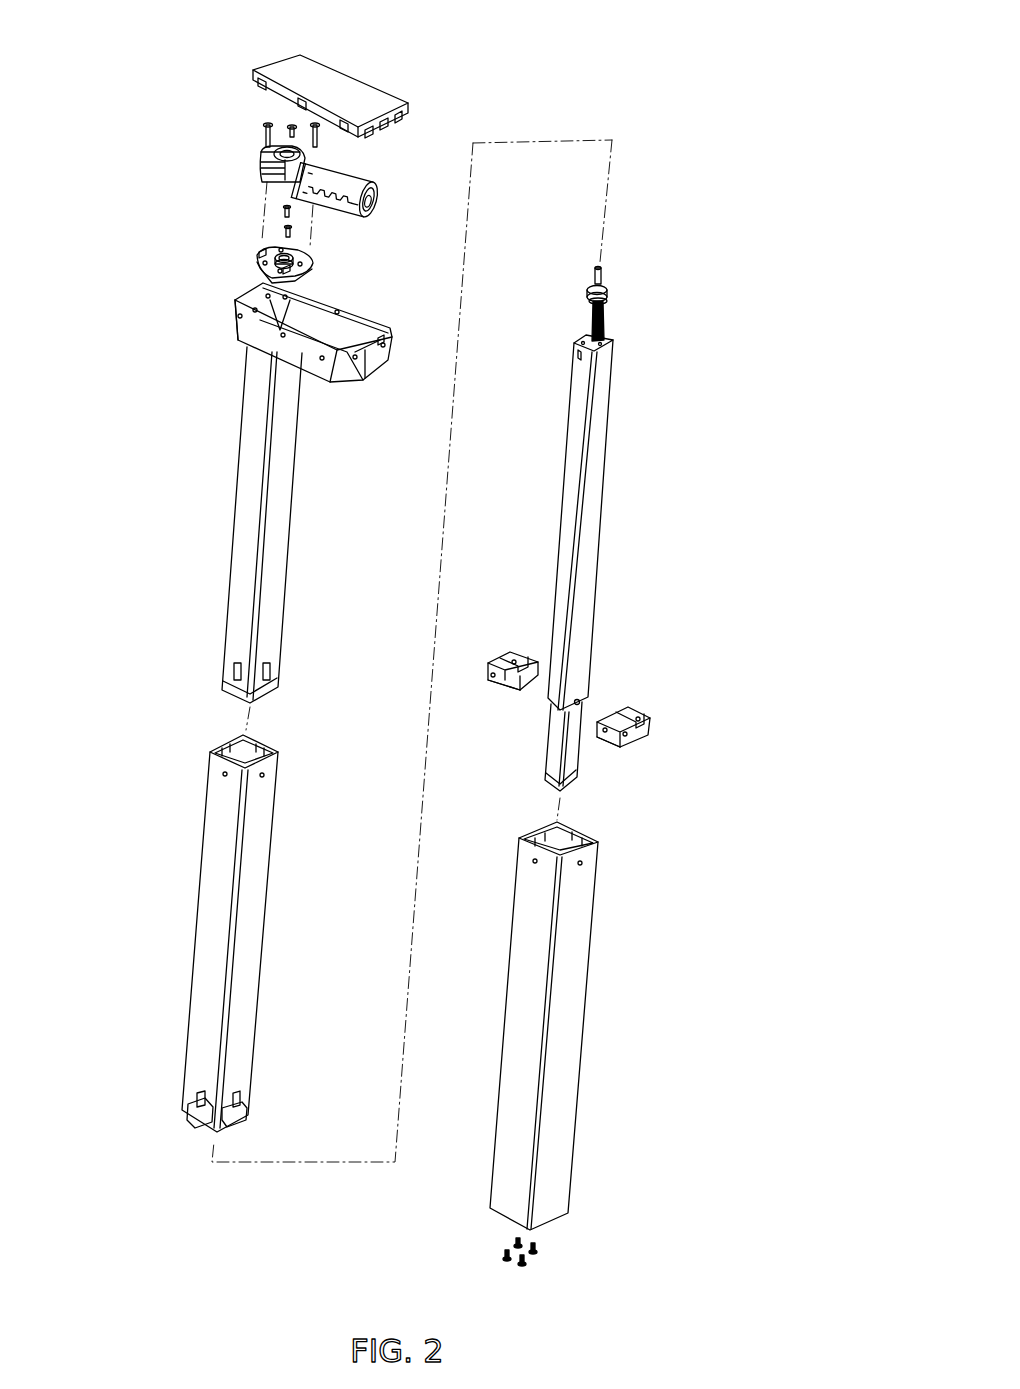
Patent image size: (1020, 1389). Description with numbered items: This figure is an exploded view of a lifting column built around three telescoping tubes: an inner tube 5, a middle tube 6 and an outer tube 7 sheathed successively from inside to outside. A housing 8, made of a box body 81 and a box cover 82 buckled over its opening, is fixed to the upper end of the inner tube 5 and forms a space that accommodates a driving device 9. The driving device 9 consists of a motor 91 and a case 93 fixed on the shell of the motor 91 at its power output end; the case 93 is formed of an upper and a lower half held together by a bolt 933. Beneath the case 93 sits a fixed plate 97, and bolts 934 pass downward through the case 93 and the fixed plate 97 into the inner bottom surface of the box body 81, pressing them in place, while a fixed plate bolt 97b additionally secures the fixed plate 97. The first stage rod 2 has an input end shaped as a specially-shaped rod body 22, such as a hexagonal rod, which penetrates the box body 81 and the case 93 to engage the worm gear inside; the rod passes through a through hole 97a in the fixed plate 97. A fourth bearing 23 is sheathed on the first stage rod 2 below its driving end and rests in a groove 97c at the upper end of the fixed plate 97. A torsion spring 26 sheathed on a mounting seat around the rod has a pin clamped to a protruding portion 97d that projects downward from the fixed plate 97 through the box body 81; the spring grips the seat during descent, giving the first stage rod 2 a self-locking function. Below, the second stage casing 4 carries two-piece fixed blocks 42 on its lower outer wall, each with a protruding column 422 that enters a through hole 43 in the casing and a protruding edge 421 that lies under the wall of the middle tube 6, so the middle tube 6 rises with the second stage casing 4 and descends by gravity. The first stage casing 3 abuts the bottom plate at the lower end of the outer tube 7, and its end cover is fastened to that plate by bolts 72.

The first stage rod 2 is at (606, 323).
The specially-shaped rod body 22 is at (605, 273).
The fourth bearing 23 is at (608, 288).
The torsion spring 26 is at (608, 303).
The first stage casing 3 is at (578, 773).
The second stage casing 4 is at (649, 516).
The fixed block 42 is at (626, 661).
The protruding edge 421 is at (493, 682).
The protruding column 422 is at (510, 672).
The through hole 43 is at (578, 701).
The inner tube 5 is at (242, 463).
The middle tube 6 is at (205, 850).
The outer tube 7 is at (585, 1028).
The bolts 72 is at (537, 1252).
The housing 8 is at (256, 339).
The box body 81 is at (233, 313).
The box cover 82 is at (358, 78).
The driving device 9 is at (221, 132).
The motor 91 is at (373, 180).
The case 93 is at (263, 158).
The bolt 933 is at (293, 126).
The bolts 934 is at (268, 123).
The fixed plate 97 is at (263, 247).
The through hole 97a is at (262, 248).
The fixed plate bolt 97b is at (292, 228).
The groove 97c is at (289, 269).
The protruding portion 97d is at (391, 322).